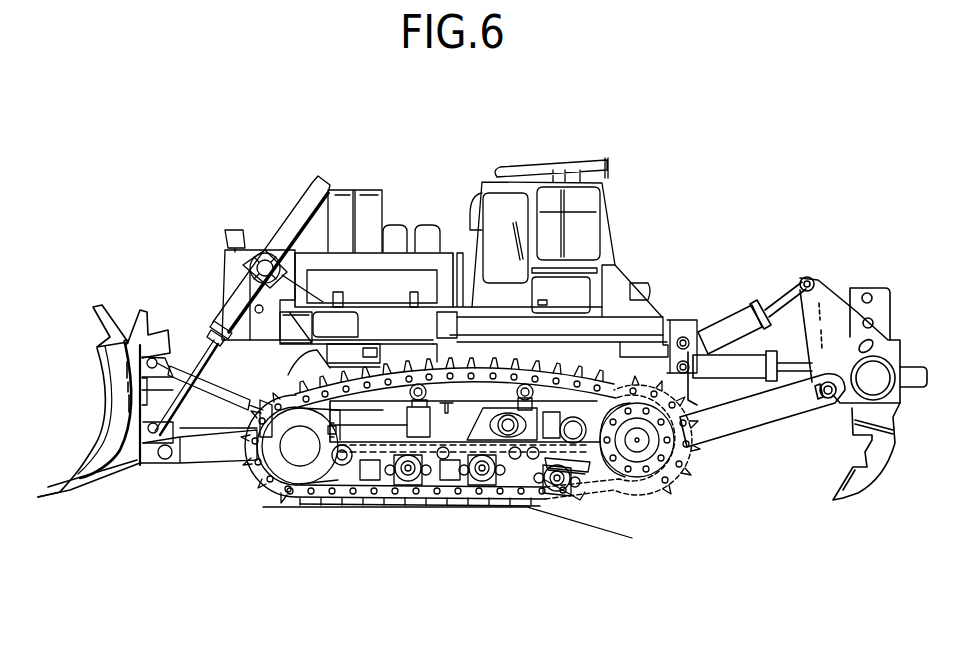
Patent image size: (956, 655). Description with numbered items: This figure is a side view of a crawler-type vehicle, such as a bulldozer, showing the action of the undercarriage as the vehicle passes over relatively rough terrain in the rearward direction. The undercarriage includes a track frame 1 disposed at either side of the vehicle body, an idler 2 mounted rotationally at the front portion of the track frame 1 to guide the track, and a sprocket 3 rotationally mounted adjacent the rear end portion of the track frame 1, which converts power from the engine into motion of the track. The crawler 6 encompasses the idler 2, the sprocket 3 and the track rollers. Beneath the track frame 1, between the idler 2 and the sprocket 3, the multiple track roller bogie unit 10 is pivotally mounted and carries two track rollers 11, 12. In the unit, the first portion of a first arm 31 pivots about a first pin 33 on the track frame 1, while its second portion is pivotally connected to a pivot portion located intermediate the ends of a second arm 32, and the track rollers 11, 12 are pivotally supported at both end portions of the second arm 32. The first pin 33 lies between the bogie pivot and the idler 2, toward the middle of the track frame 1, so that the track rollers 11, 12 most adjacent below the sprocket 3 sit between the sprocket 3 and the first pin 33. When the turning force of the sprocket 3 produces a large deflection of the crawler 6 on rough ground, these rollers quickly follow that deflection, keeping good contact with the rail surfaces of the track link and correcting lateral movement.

The track frame 1 is at (389, 505).
The idler 2 is at (288, 490).
The sprocket 3 is at (677, 492).
The crawler 6 is at (648, 503).
The multiple track roller bogie unit 10 is at (482, 530).
The track roller 11 is at (509, 505).
The track roller 12 is at (577, 500).
The first arm 31 is at (532, 500).
The second arm 32 is at (572, 511).
The first pin 33 is at (500, 496).